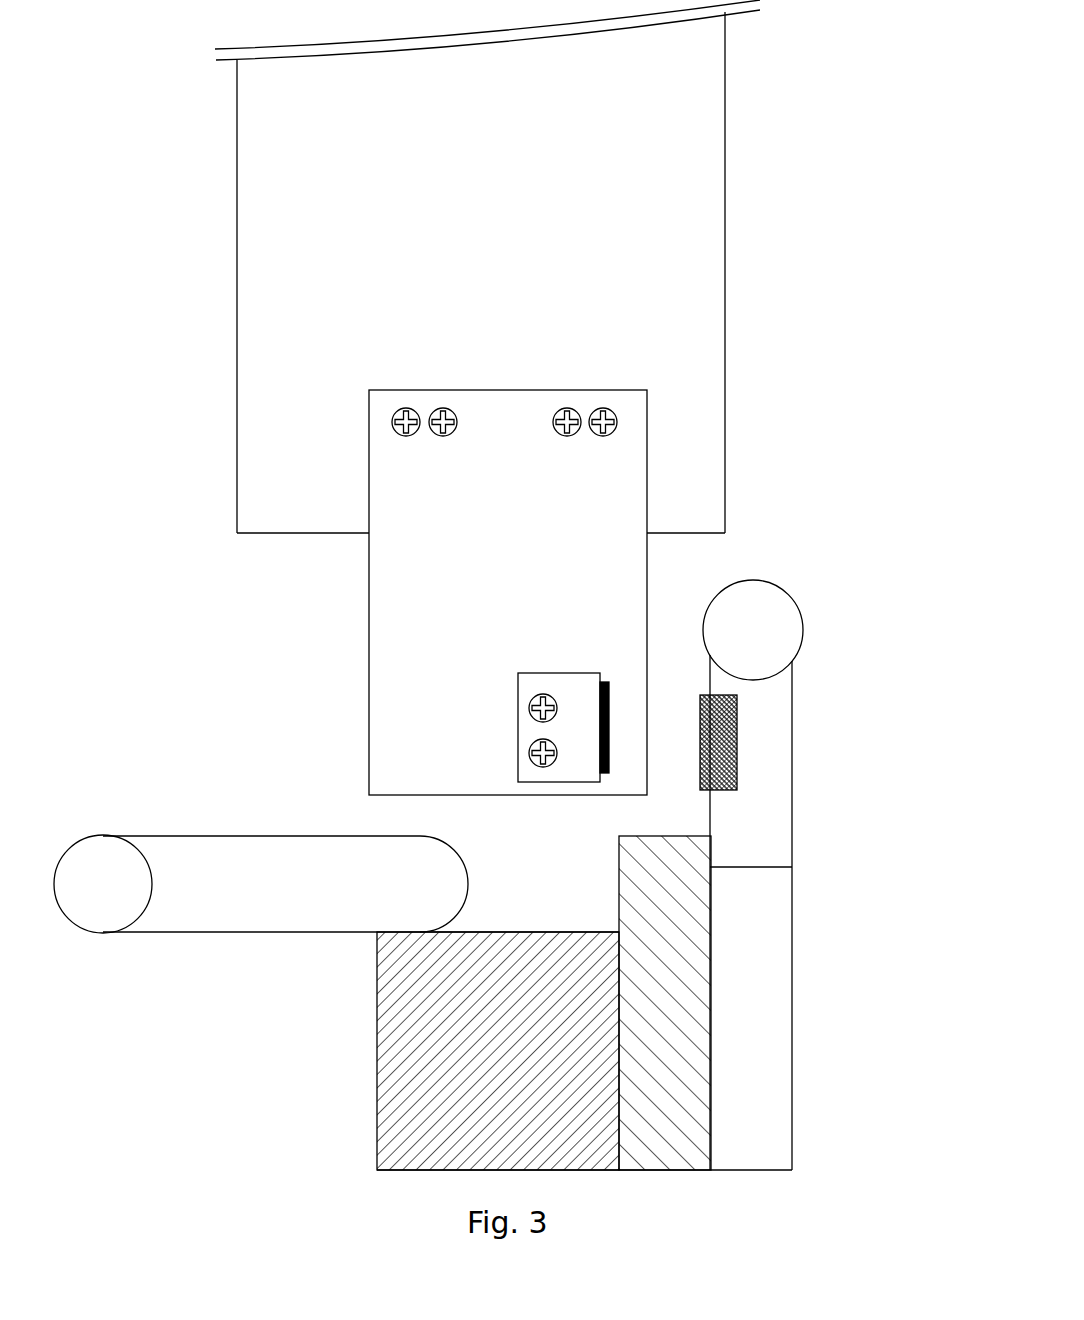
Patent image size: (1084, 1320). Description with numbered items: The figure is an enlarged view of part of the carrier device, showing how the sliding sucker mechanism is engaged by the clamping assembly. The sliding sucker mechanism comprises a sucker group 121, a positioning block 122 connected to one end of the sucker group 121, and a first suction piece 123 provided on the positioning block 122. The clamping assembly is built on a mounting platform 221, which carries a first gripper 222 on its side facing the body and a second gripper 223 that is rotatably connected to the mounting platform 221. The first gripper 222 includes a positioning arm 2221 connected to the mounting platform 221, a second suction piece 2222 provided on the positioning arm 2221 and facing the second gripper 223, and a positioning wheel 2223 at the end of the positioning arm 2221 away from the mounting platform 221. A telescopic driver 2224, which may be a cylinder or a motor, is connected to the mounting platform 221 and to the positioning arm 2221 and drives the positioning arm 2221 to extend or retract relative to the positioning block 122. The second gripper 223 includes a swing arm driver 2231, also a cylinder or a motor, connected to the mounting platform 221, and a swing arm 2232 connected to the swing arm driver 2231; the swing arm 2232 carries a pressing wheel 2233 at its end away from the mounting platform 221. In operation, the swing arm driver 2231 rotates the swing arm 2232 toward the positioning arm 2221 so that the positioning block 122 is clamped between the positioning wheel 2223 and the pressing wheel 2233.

The sucker group 121 is at (302, 277).
The positioning block 122 is at (390, 582).
The first suction piece 123 is at (607, 732).
The mounting platform 221 is at (747, 1153).
The first gripper 222 is at (783, 875).
The positioning arm 2221 is at (755, 837).
The second suction piece 2222 is at (723, 765).
The positioning wheel 2223 is at (755, 642).
The telescopic driver 2224 is at (742, 1003).
The second gripper 223 is at (336, 1002).
The swing arm driver 2231 is at (390, 963).
The swing arm 2232 is at (180, 917).
The pressing wheel 2233 is at (103, 920).